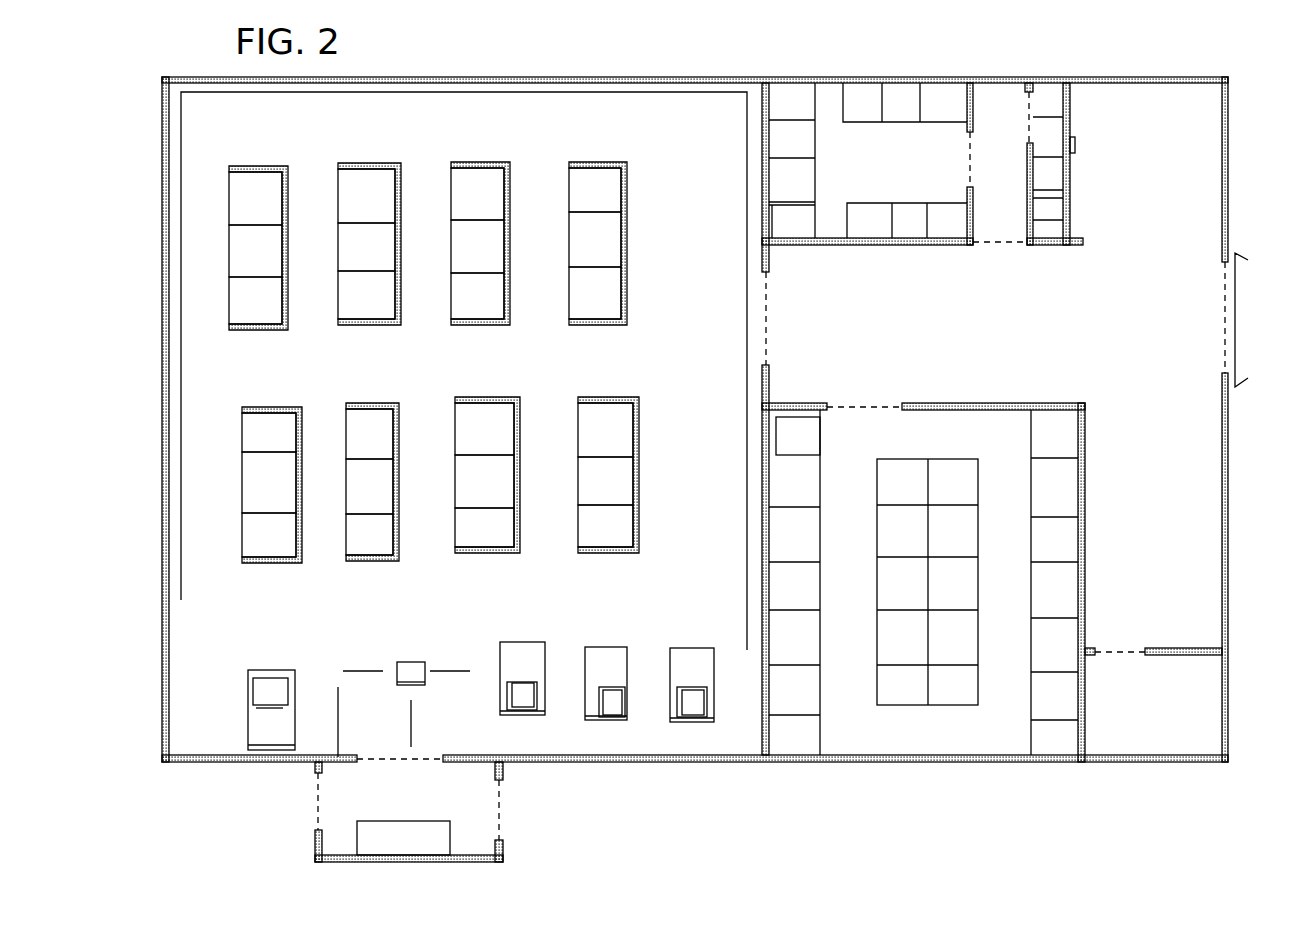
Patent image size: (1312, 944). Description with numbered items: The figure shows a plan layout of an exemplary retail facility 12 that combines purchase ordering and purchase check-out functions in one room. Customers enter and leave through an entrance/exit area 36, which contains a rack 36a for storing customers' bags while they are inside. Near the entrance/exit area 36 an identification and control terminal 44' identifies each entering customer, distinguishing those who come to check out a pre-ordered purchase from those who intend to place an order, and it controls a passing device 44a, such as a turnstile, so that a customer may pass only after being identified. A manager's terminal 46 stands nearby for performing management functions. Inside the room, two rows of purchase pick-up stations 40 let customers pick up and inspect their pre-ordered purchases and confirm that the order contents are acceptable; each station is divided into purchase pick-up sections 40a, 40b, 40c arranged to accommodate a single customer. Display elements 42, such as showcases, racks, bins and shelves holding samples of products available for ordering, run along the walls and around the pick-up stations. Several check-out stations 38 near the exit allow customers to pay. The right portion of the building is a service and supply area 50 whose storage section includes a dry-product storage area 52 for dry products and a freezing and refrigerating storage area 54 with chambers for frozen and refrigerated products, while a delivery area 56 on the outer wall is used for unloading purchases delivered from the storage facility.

The retail facility 12 is at (541, 60).
The entrance/exit area 36 is at (487, 810).
The rack 36a is at (422, 847).
The check-out station 38 is at (610, 722).
The purchase pick-up station 40 is at (415, 373).
The purchase pick-up section 40a is at (337, 202).
The purchase pick-up section 40b is at (337, 268).
The purchase pick-up section 40c is at (273, 310).
The display element 42 is at (410, 93).
The reader 44' is at (404, 688).
The passing device 44a is at (425, 686).
The manager's terminal 46 is at (297, 680).
The service and supply area 50 is at (1007, 77).
The dry-product storage area 52 is at (947, 735).
The freezing and refrigerating storage area 54 is at (948, 190).
The delivery area 56 is at (1213, 300).